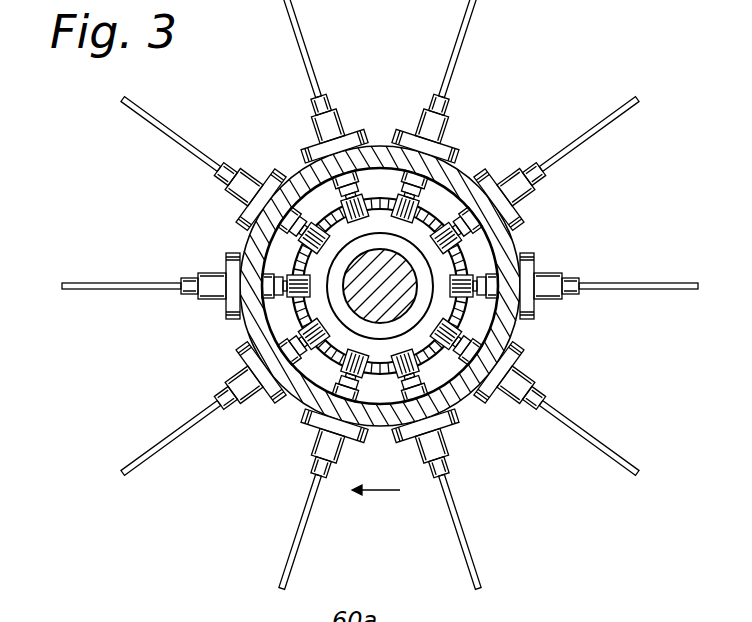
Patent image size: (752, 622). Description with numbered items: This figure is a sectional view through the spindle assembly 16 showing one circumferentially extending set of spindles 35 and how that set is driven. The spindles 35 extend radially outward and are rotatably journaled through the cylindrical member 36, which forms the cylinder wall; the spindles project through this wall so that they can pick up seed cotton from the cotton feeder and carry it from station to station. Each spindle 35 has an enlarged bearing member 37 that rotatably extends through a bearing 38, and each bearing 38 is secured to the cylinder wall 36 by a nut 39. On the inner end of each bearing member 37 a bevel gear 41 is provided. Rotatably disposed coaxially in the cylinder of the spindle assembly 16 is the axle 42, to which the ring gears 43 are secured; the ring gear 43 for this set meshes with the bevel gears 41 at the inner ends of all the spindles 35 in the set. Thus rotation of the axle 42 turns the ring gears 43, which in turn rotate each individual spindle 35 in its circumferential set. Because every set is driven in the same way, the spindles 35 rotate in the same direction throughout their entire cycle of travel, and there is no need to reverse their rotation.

The spindle assembly 16 is at (244, 239).
The spindles 35 is at (88, 283).
The cylindrical member 36 is at (528, 330).
The bearing member 37 is at (183, 277).
The bearings 38 is at (237, 373).
The nuts 39 is at (223, 310).
The bevel gears 41 is at (290, 270).
The axle 42 is at (403, 273).
The ring gears 43 is at (293, 407).